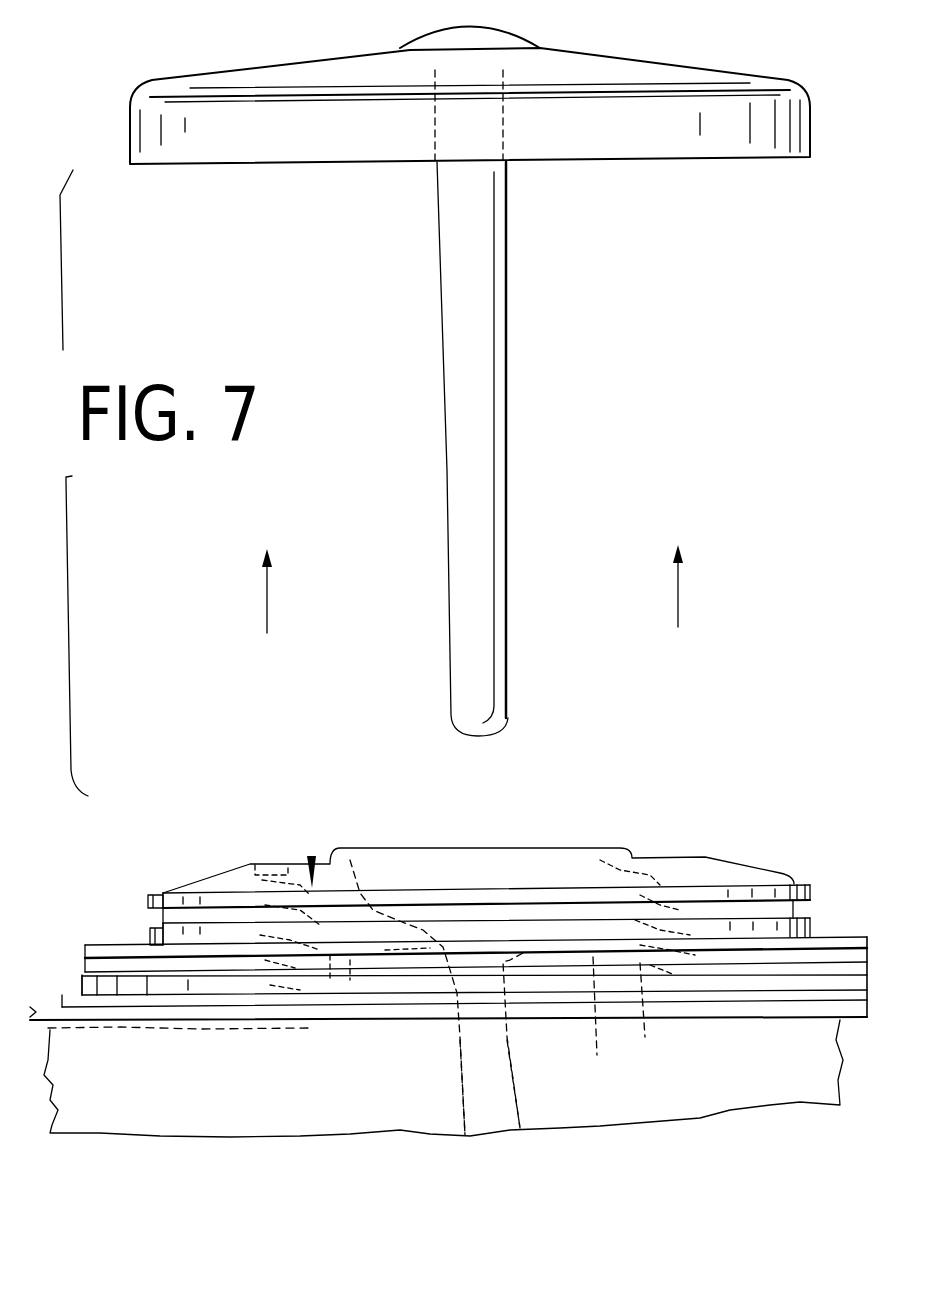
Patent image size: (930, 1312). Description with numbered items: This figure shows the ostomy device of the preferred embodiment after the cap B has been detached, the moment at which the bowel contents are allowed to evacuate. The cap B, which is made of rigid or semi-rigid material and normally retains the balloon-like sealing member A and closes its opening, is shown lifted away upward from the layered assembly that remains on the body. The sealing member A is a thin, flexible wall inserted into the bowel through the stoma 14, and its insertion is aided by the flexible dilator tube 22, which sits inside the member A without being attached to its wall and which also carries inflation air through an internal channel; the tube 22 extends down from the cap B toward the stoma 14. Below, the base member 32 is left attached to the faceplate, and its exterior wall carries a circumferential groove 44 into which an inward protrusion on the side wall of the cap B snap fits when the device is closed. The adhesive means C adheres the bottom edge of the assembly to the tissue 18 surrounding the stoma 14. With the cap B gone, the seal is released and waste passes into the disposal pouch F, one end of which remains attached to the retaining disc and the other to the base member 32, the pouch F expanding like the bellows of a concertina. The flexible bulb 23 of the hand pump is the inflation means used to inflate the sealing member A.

The dilator tube 22 is at (458, 240).
The base member 32 is at (150, 897).
The circumferential groove 44 is at (160, 920).
The flexible bulb 23 is at (80, 992).
The stoma 14 is at (598, 1052).
The tissue 18 is at (765, 1053).
The cap B is at (214, 68).
The adhesive means C is at (82, 952).
The waste collection receptacle F is at (308, 855).
The sealing member A is at (440, 1073).